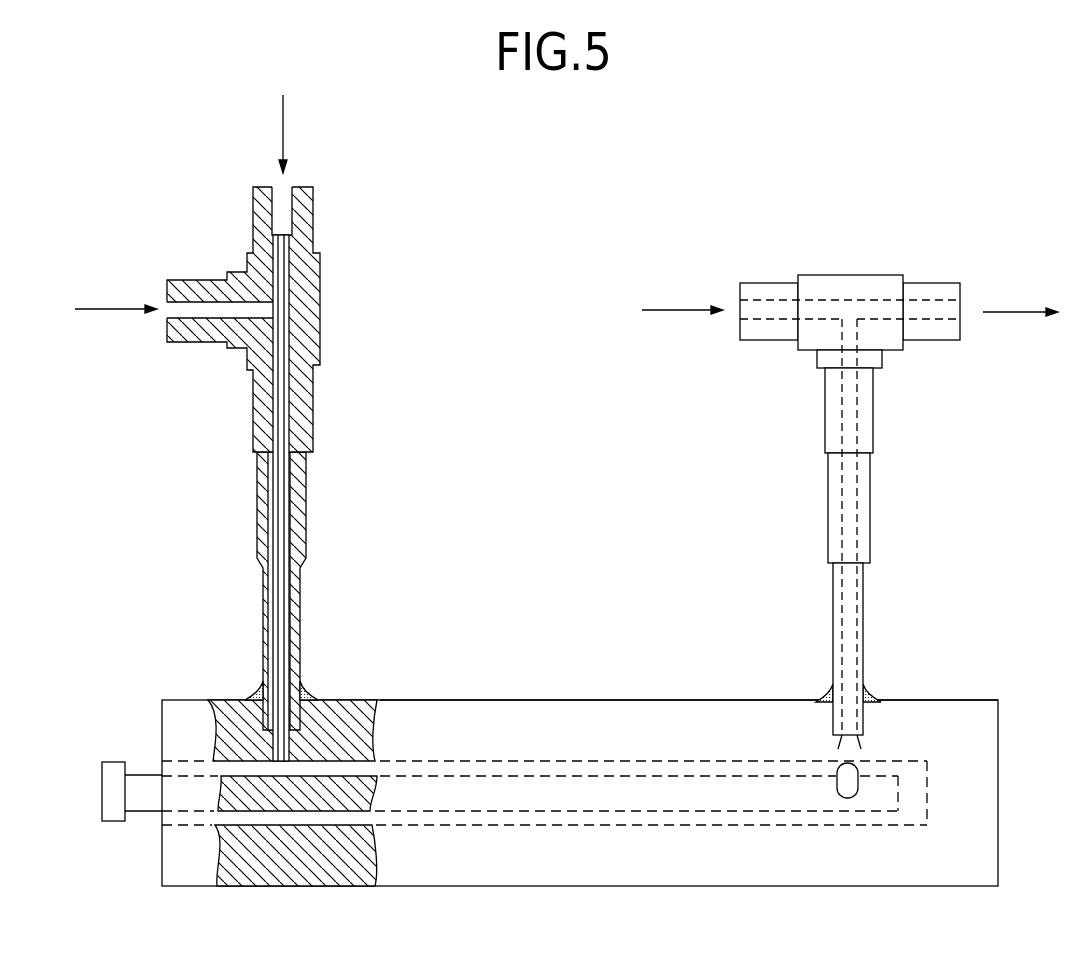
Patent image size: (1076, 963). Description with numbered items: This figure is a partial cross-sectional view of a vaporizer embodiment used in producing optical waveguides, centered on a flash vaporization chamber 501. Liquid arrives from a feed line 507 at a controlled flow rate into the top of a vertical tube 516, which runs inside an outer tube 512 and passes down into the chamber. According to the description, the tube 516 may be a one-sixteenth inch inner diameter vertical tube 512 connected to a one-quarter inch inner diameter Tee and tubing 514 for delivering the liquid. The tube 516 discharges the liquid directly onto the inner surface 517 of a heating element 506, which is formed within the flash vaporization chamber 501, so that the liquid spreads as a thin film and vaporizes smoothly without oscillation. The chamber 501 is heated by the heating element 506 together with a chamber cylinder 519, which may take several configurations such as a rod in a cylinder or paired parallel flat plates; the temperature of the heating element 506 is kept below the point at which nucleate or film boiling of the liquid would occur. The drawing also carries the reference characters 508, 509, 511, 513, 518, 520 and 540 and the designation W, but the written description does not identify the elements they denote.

The flash vaporization chamber 501 is at (965, 700).
The heating element 506 is at (113, 762).
The feed line 507 is at (283, 133).
The passage 508 is at (303, 813).
The outlet opening 509 is at (857, 742).
The outlet flow 511 is at (1025, 310).
The outer tube 512 is at (305, 482).
The T fitting 513 is at (870, 527).
The Tee and tubing 514 is at (336, 310).
The vertical tube 516 is at (287, 523).
The inner surface 517 is at (347, 762).
The channel 518 is at (342, 827).
The chamber cylinder 519 is at (592, 713).
The inlet flow 520 is at (673, 308).
The inlet flow 540 is at (100, 309).
The weld W is at (305, 690).